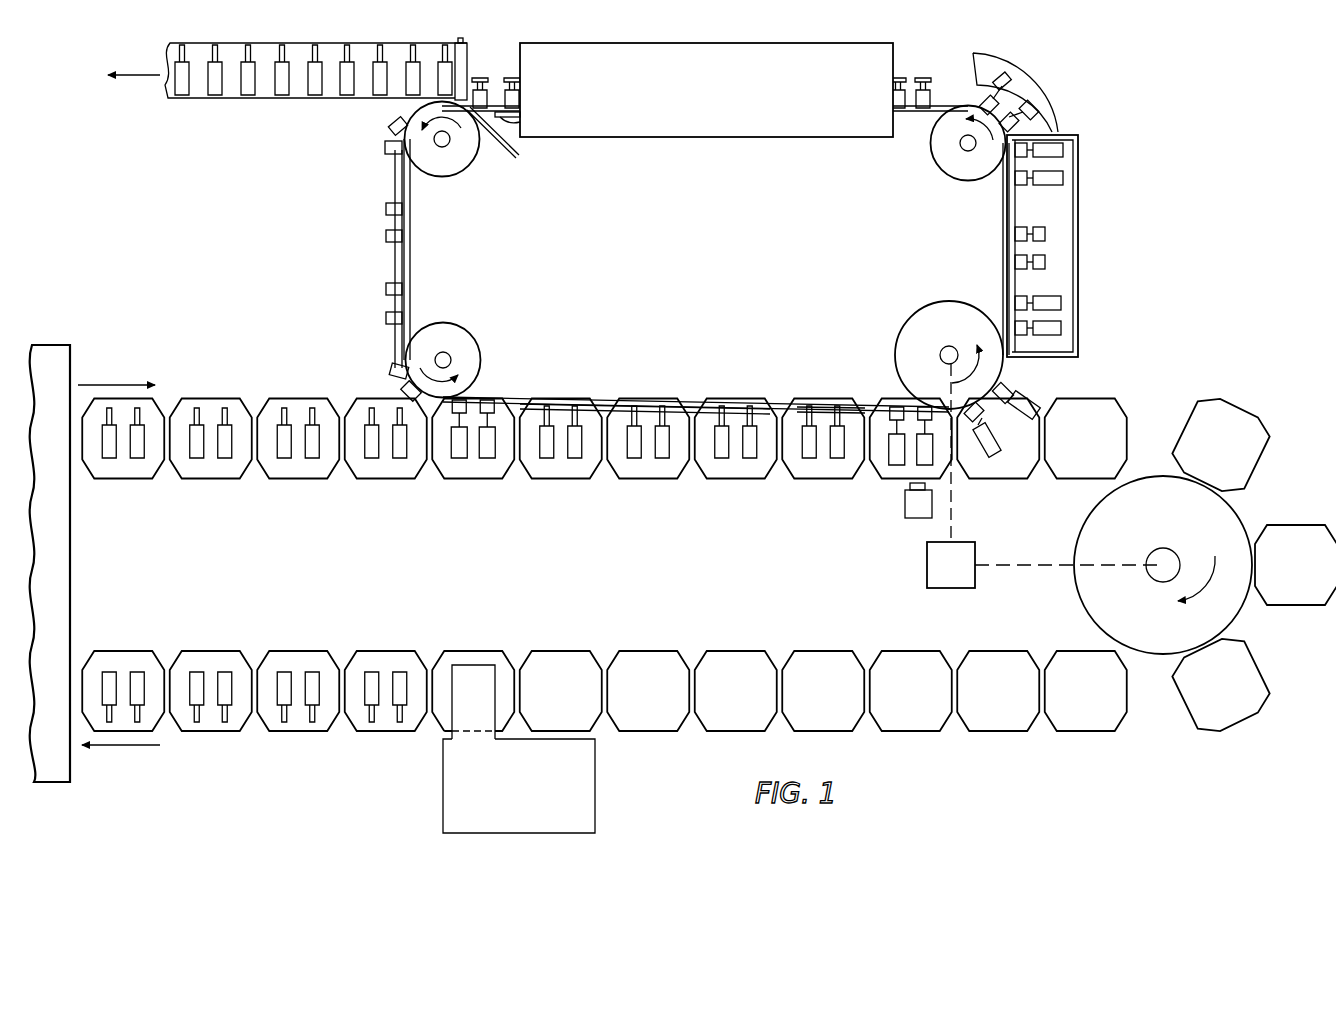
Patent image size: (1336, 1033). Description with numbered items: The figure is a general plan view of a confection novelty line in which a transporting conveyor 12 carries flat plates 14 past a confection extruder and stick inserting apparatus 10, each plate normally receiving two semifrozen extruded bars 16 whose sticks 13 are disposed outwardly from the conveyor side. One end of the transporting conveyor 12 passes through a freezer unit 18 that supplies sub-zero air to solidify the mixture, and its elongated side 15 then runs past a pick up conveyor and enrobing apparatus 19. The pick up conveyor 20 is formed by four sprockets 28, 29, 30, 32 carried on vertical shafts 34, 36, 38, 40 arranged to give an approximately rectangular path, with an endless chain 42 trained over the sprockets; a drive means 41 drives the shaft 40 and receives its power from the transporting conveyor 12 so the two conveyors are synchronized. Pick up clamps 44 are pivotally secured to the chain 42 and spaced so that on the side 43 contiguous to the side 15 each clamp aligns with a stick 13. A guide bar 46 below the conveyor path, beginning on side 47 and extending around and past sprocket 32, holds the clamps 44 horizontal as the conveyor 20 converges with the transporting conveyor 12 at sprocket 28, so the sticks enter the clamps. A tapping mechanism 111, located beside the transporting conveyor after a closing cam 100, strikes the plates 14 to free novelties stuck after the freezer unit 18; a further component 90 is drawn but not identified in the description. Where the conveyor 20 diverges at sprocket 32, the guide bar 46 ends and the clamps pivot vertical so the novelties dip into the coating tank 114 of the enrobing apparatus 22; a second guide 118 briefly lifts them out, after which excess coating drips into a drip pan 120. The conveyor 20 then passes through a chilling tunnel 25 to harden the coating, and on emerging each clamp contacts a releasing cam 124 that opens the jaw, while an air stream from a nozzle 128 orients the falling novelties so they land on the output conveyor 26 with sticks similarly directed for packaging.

The confection extruder and stick inserting apparatus 10 is at (528, 794).
The transporting conveyor 12 is at (709, 565).
The stick 13 is at (221, 408).
The flat plates 14 is at (709, 565).
The elongated side 15 is at (581, 483).
The semifrozen extruded bars 16 is at (317, 78).
The freezer unit 18 is at (66, 572).
The pick up conveyor and enrobing apparatus 19 is at (660, 259).
The pick up conveyor 20 is at (706, 257).
The enrobing apparatus 22 is at (1068, 206).
The chilling tunnel 25 is at (723, 93).
The output conveyor 26 is at (240, 95).
The sprocket 28 is at (450, 322).
The sprocket 29 is at (468, 148).
The sprocket 30 is at (951, 165).
The sprocket 32 is at (910, 336).
The vertical shaft 34 is at (444, 141).
The vertical shaft 36 is at (449, 356).
The vertical shaft 38 is at (959, 144).
The vertical shaft 40 is at (951, 347).
The drive means 41 is at (961, 577).
The endless chain 42 is at (410, 222).
The side 43 is at (554, 394).
The pick up clamps 44 is at (383, 235).
The guide bar 46 is at (395, 187).
The side 47 is at (422, 258).
The plate 90 is at (641, 404).
The closing cam 100 is at (831, 391).
The tapping mechanism 111 is at (905, 503).
The coating tank 114 is at (1082, 207).
The second guide 118 is at (1012, 206).
The drip pan 120 is at (1033, 83).
The releasing cam 124 is at (520, 117).
The nozzle 128 is at (505, 148).